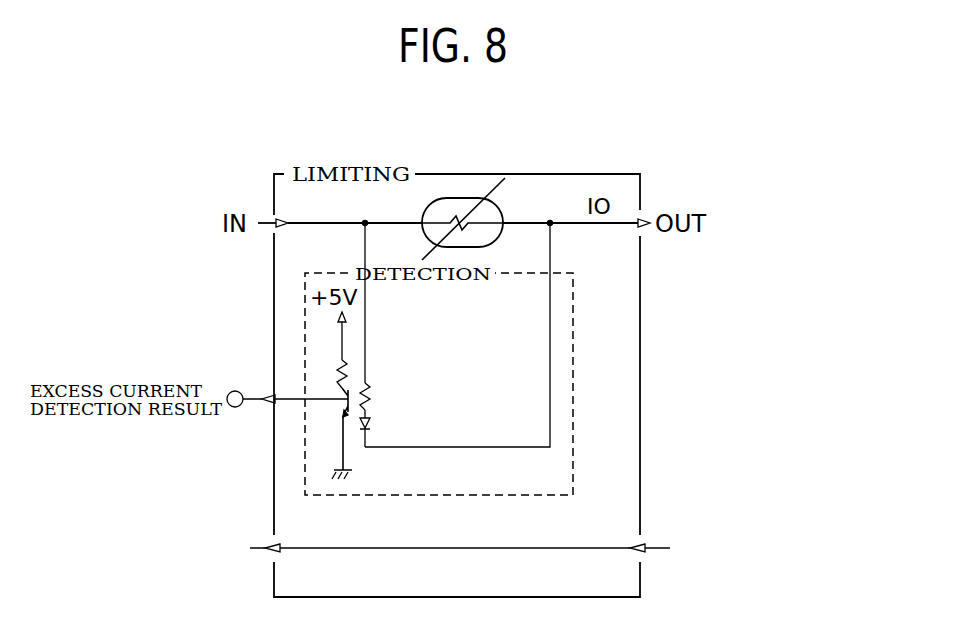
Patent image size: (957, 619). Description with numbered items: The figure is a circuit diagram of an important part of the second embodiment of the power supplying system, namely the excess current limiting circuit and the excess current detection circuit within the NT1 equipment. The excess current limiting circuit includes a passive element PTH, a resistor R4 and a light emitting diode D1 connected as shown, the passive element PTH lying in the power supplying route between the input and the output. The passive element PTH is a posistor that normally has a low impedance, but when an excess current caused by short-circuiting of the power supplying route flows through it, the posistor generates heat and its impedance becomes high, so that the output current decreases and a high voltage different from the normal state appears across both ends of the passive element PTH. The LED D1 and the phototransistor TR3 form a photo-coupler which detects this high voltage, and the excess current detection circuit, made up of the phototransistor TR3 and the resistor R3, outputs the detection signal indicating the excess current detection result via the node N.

The passive element PTH is at (423, 217).
The resistor R3 is at (327, 374).
The resistor R4 is at (383, 396).
The light emitting diode D1 is at (384, 428).
The phototransistor TR3 is at (349, 424).